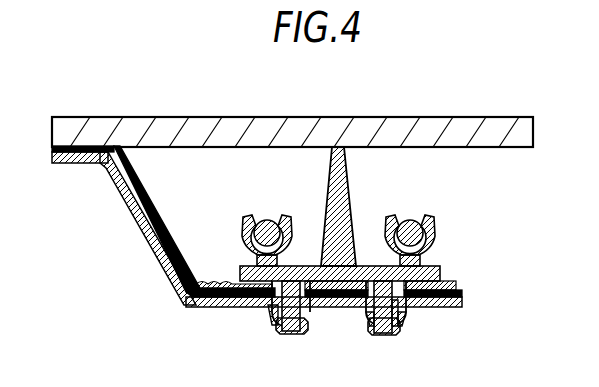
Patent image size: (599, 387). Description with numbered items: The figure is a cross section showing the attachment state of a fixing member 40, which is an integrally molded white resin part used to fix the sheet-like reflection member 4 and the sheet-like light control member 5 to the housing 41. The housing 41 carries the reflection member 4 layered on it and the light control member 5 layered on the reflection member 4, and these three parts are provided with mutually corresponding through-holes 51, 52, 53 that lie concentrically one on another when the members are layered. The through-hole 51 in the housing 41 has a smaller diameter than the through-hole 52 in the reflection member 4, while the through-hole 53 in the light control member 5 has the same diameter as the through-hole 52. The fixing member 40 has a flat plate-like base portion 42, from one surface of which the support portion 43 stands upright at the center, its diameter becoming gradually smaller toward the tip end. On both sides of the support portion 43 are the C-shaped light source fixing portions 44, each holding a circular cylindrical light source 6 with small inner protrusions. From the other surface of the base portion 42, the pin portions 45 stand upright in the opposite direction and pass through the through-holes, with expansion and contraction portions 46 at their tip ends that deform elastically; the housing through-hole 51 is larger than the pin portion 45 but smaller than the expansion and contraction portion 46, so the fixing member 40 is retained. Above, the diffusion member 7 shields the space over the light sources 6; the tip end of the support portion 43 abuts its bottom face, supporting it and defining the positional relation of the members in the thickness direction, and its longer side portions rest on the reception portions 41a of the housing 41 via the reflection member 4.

The reflection member 4 is at (465, 305).
The light control member 5 is at (462, 290).
The light source 6 is at (265, 218).
The diffusion member 7 is at (432, 128).
The fixing member 40 is at (470, 190).
The housing 41 is at (183, 307).
The reception portion 41a is at (72, 157).
The base portion 42 is at (440, 270).
The support portion 43 is at (327, 190).
The light source fixing portion 44 is at (243, 237).
The pin portion 45 is at (372, 327).
The expansion and contraction portion 46 is at (402, 325).
The through-hole 51 is at (280, 328).
The through-hole 52 is at (300, 265).
The through-hole 53 is at (376, 265).